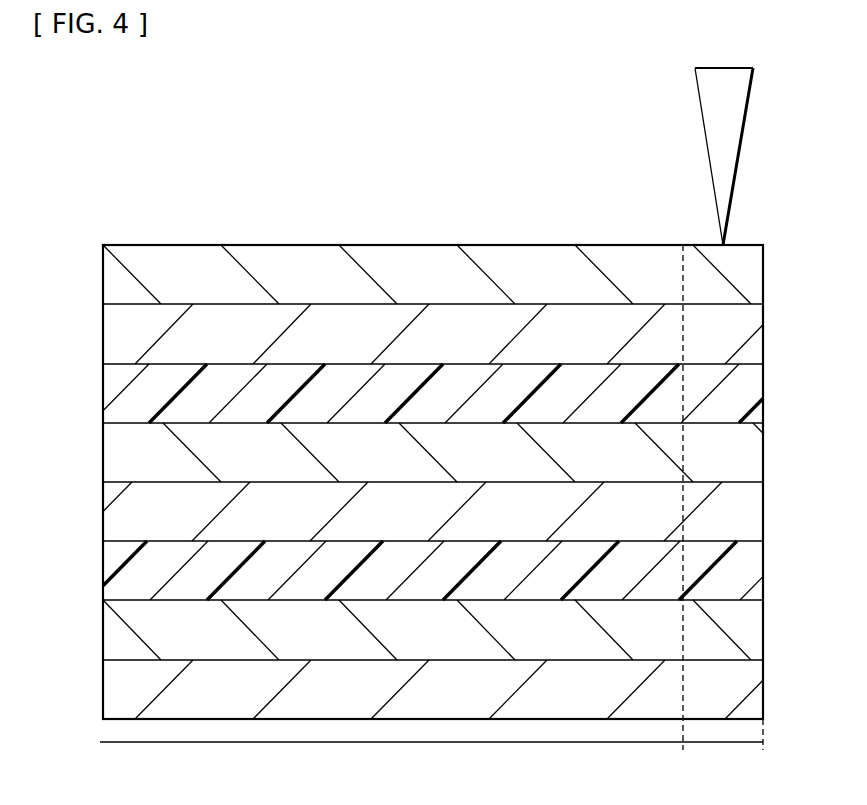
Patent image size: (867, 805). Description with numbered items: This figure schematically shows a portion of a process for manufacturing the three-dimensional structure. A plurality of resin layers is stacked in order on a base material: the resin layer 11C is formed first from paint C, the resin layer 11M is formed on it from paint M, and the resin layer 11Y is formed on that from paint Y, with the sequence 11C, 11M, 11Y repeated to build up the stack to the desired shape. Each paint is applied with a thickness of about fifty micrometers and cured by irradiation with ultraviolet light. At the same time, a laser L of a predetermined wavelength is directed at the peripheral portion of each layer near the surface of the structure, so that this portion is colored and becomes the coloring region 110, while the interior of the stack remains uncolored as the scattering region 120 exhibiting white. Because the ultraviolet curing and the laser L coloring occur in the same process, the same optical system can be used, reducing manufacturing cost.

The resin layer 11M is at (756, 272).
The resin layer 11C is at (756, 331).
The resin layer 11Y is at (756, 390).
The laser L is at (730, 152).
The coloring region 110 is at (763, 742).
The scattering region 120 is at (683, 742).